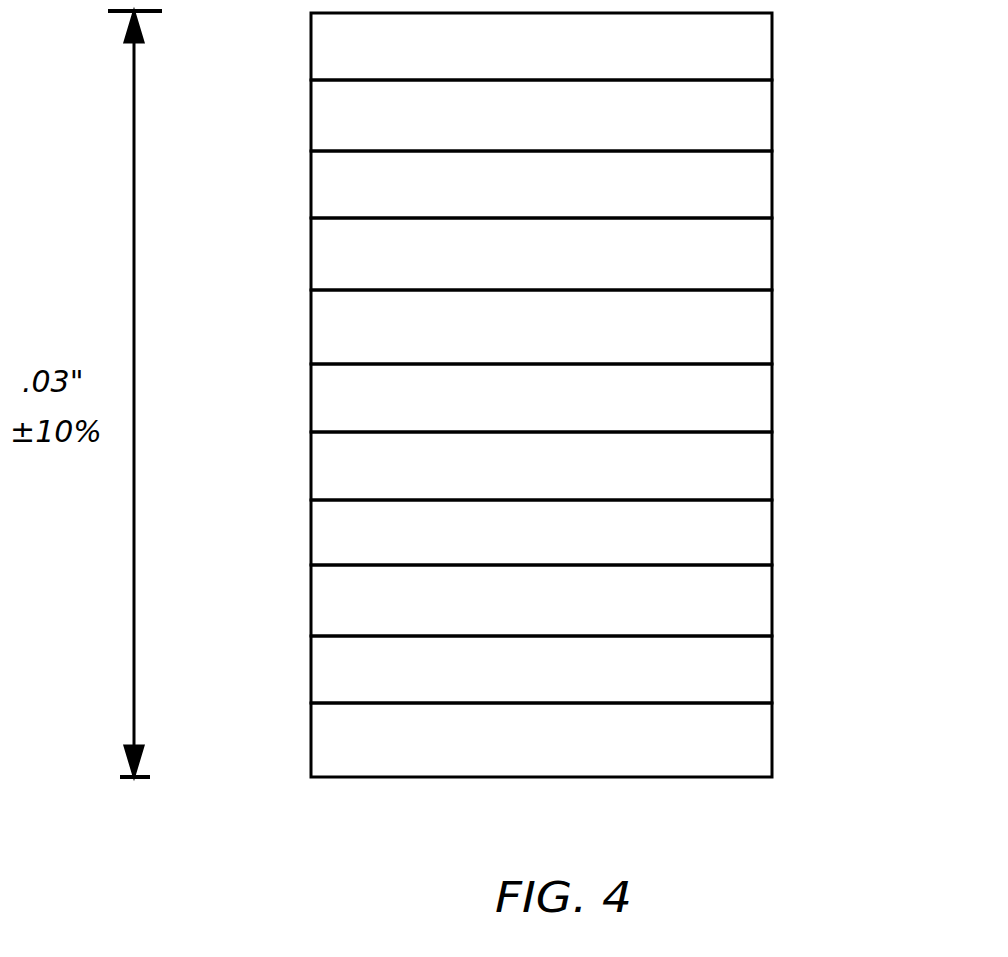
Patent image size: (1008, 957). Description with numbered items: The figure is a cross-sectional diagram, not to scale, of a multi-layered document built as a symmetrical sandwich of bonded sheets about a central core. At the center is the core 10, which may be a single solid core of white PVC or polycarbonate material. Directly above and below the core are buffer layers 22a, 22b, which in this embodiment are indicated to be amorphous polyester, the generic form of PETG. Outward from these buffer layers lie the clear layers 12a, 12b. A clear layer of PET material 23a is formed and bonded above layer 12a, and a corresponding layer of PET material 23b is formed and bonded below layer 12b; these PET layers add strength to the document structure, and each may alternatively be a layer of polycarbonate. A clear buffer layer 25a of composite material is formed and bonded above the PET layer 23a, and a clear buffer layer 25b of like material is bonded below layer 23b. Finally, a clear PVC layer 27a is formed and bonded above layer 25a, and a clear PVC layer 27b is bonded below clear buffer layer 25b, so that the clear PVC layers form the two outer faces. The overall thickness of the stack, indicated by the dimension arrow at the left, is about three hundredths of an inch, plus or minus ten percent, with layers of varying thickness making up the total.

The clear PVC layer 27a is at (775, 47).
The clear buffer layer 25a is at (775, 120).
The clear layer of PET material 23a is at (775, 188).
The layer 12a is at (775, 254).
The buffer layer 22a is at (775, 325).
The single solid core 10 is at (775, 396).
The buffer layer 22b is at (760, 470).
The layer 12b is at (765, 540).
The layer of PET material 23b is at (775, 610).
The clear buffer layer 25b is at (772, 680).
The clear PVC layer 27b is at (775, 745).